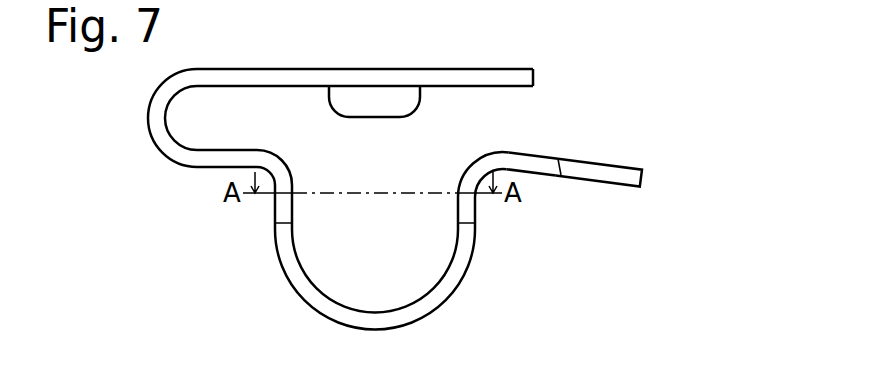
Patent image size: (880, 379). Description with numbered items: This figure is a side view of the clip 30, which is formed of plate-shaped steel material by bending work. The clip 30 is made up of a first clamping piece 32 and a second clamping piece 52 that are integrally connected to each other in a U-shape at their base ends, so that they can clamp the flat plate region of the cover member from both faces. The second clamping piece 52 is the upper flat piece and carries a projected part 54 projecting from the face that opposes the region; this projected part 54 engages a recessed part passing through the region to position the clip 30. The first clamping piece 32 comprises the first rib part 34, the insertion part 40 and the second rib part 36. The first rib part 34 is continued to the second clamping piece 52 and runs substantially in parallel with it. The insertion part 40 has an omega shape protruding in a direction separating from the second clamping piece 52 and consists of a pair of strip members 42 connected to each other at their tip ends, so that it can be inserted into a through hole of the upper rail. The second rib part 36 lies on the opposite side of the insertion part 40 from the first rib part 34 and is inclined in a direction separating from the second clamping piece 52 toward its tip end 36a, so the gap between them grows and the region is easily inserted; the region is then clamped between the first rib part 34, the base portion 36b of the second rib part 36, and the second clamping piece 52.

The clip 30 is at (718, 53).
The second clamping piece 52 is at (568, 81).
The projected part 54 is at (358, 105).
The first rib part 34 is at (203, 160).
The insertion part 40 is at (282, 245).
The strip member 42 is at (463, 252).
The first clamping piece 32 is at (660, 151).
The second rib part 36 is at (543, 165).
The tip end 36a is at (632, 178).
The base portion 36b is at (497, 160).